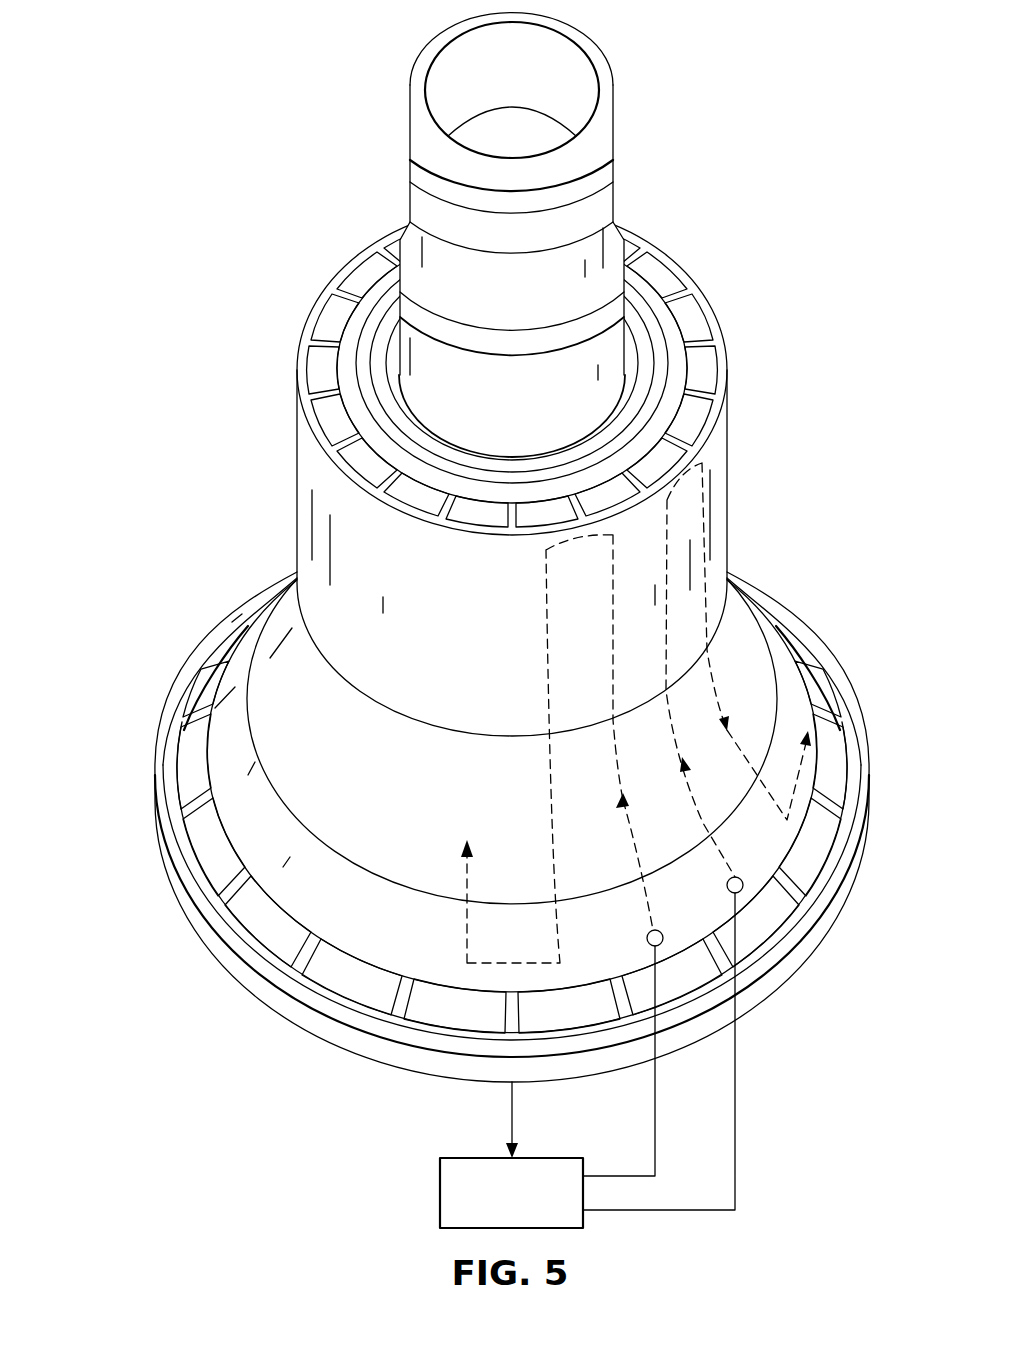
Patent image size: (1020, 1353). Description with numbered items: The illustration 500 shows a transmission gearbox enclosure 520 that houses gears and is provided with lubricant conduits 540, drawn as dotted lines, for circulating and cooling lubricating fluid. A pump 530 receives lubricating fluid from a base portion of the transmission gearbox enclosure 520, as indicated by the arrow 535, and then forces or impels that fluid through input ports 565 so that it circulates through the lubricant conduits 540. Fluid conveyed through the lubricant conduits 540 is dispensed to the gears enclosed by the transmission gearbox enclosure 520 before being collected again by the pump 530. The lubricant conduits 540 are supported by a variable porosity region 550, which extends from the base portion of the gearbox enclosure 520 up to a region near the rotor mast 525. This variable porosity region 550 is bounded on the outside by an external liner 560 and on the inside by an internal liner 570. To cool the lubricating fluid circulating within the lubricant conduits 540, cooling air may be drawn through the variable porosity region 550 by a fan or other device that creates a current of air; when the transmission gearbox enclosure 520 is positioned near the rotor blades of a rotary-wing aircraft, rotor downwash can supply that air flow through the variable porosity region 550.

The illustration 500 is at (257, 94).
The transmission gearbox enclosure 520 is at (246, 534).
The rotor mast 525 is at (410, 138).
The pump 530 is at (440, 1196).
The arrow 535 is at (511, 1117).
The lubricant conduits 540 is at (712, 690).
The variable porosity region 550 is at (663, 282).
The external liner 560 is at (325, 440).
The input ports 565 is at (740, 878).
The internal liner 570 is at (352, 355).